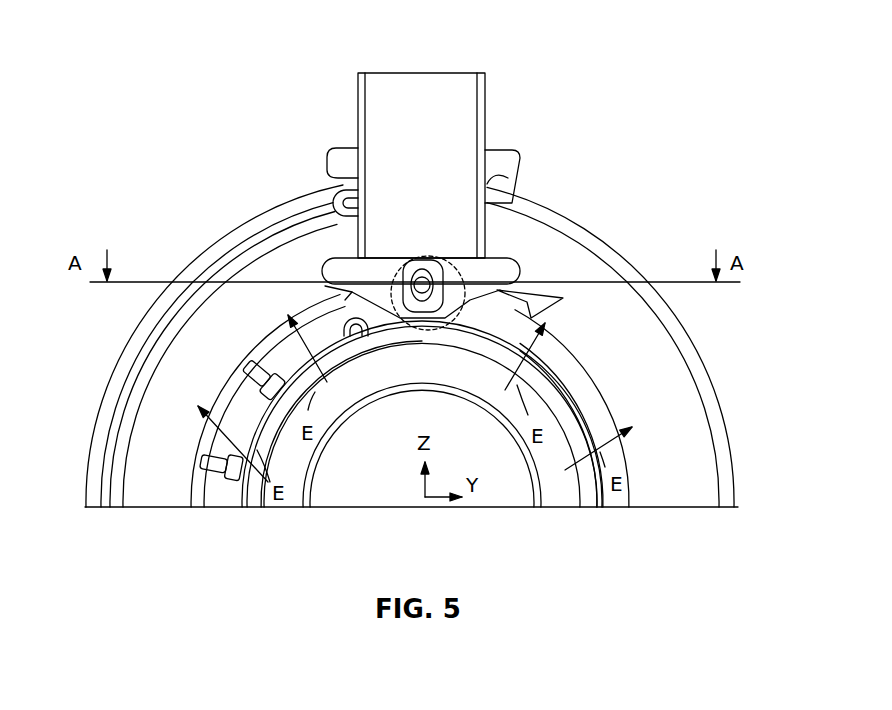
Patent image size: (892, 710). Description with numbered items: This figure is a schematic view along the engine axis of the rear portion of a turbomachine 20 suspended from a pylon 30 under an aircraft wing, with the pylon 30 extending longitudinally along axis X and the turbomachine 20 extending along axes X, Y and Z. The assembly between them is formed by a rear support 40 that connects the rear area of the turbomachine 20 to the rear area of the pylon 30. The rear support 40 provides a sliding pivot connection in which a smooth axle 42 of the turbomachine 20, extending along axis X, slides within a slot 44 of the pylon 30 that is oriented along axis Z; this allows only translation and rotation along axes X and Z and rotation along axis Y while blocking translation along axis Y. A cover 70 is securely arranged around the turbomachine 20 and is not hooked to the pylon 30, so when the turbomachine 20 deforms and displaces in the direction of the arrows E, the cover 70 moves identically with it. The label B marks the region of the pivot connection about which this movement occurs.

The turbomachine 20 is at (664, 359).
The pylon 30 is at (487, 108).
The rear support 40 is at (523, 257).
The smooth axle 42 is at (426, 292).
The slot 44 is at (472, 262).
The cover 70 is at (205, 480).
The rotation axis B is at (448, 290).